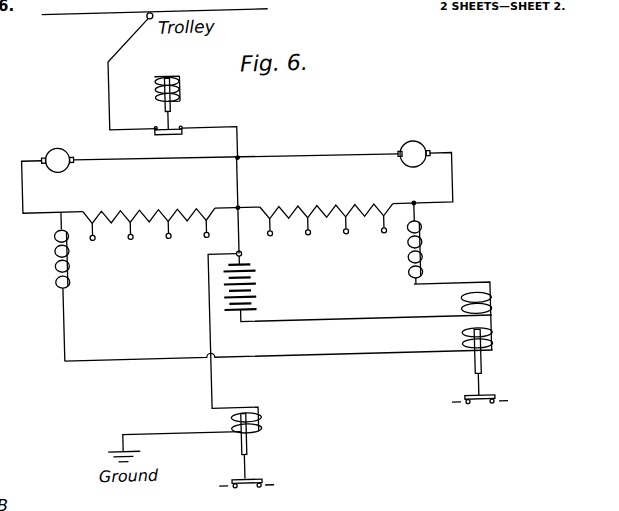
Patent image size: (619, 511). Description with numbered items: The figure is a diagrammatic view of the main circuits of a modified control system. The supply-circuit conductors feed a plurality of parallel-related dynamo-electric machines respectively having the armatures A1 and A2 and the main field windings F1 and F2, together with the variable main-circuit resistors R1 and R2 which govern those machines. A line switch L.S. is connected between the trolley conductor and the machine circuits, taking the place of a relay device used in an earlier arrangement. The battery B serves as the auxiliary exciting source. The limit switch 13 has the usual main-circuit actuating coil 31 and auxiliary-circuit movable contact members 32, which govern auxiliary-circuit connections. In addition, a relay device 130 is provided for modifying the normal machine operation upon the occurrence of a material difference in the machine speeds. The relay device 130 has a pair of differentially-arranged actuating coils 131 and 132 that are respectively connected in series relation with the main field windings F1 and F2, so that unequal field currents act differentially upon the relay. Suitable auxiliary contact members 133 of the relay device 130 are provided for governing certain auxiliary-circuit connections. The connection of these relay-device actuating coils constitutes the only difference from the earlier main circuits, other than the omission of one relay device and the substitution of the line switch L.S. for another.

The actuating coil 132 is at (491, 304).
The actuating coil 131 is at (490, 342).
The relay device 130 is at (503, 361).
The auxiliary contact members 133 is at (480, 408).
The main-circuit actuating coil 31 is at (257, 421).
The limit switch 13 is at (264, 445).
The auxiliary-circuit movable contact members 32 is at (247, 495).
The armature A1 is at (57, 149).
The armature A2 is at (412, 144).
The main-circuit resistor R1 is at (148, 210).
The main-circuit resistor R2 is at (326, 206).
The field winding F1 is at (43, 287).
The field winding F2 is at (430, 243).
The battery B is at (357, 286).
The line switch L.S. is at (184, 105).